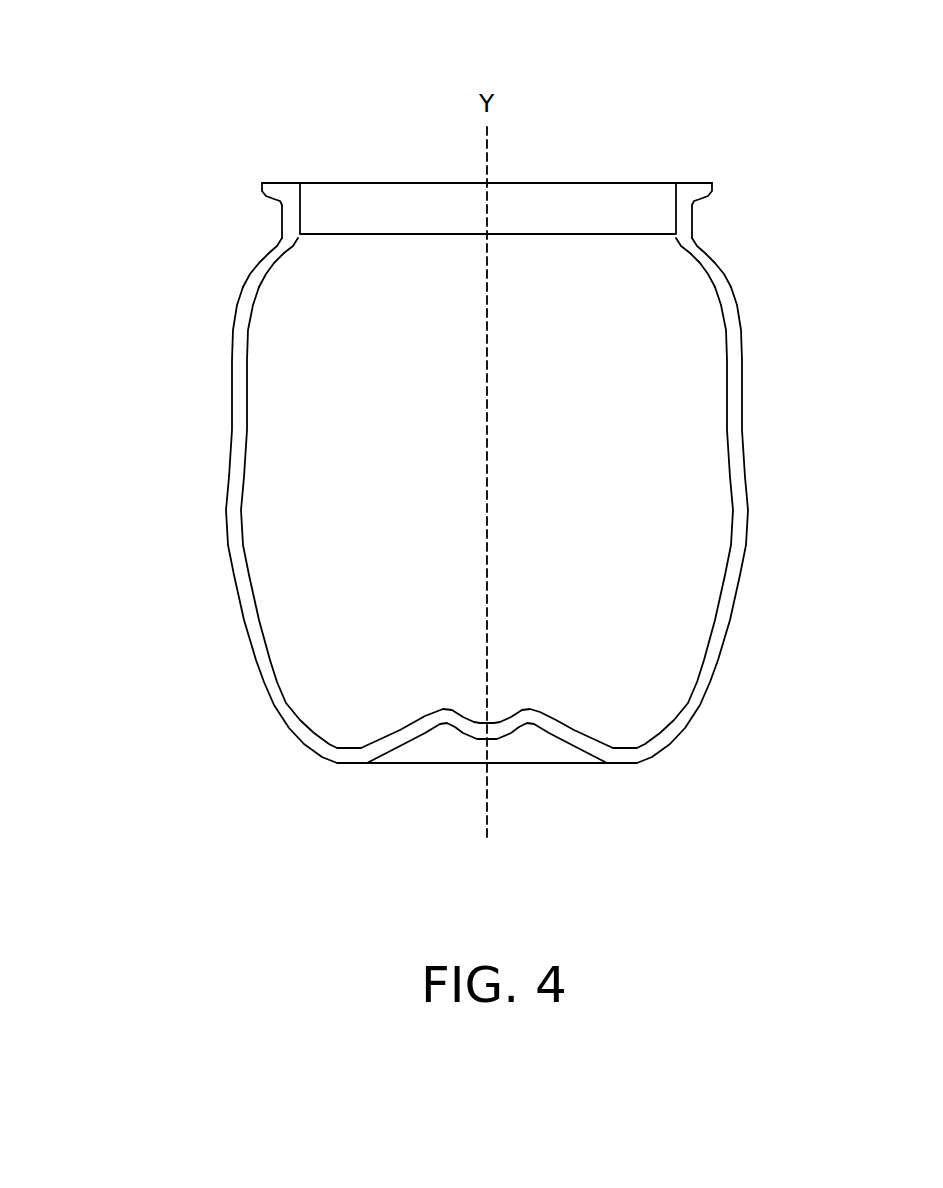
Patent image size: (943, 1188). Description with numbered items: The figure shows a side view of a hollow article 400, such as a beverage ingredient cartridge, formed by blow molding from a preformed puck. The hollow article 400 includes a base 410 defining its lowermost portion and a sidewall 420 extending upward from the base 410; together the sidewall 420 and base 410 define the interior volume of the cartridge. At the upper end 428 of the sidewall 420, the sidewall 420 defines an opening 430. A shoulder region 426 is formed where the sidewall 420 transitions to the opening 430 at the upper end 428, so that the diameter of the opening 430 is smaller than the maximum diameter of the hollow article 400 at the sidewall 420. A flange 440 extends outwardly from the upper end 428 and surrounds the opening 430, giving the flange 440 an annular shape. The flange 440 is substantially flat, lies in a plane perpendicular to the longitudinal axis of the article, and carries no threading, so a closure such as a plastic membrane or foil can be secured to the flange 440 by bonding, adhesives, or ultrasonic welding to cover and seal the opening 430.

The hollow article 400 is at (170, 110).
The base 410 is at (492, 740).
The sidewall 420 is at (732, 508).
The shoulder region 426 is at (710, 258).
The upper end 428 is at (685, 182).
The opening 430 is at (378, 187).
The flange 440 is at (712, 190).